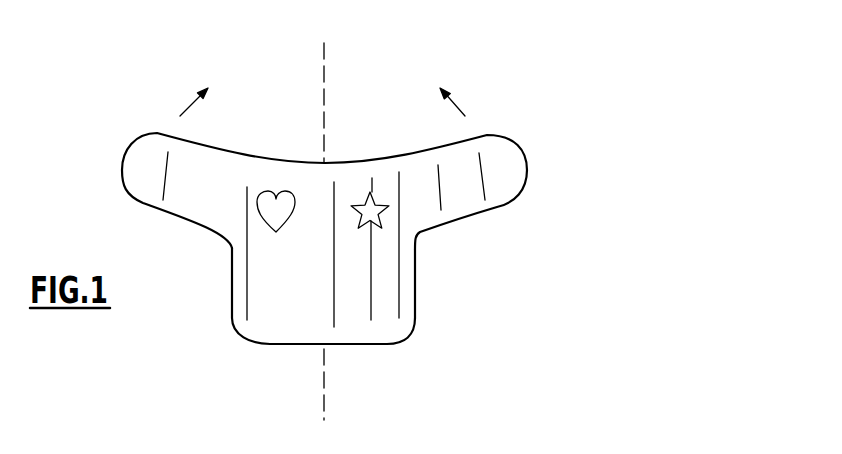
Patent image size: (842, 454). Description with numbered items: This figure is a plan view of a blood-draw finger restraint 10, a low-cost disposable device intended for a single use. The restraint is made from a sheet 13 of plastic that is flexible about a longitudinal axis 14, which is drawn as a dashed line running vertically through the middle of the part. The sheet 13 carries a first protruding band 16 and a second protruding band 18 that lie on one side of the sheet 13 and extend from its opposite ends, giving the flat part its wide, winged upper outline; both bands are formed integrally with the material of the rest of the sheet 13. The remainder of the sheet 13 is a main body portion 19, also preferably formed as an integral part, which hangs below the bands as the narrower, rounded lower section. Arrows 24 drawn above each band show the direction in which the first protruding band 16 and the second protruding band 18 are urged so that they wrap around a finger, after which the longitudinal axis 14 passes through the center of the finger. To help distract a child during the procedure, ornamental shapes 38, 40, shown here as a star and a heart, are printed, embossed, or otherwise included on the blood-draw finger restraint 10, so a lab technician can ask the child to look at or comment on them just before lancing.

The blood-draw finger restraint 10 is at (330, 172).
The sheet 13 is at (416, 260).
The longitudinal axis 14 is at (323, 80).
The first protruding band 16 is at (498, 188).
The second protruding band 18 is at (153, 192).
The main body portion 19 is at (255, 295).
The arrows 24 is at (173, 133).
The ornamental shape 38 is at (370, 192).
The ornamental shape 40 is at (272, 210).